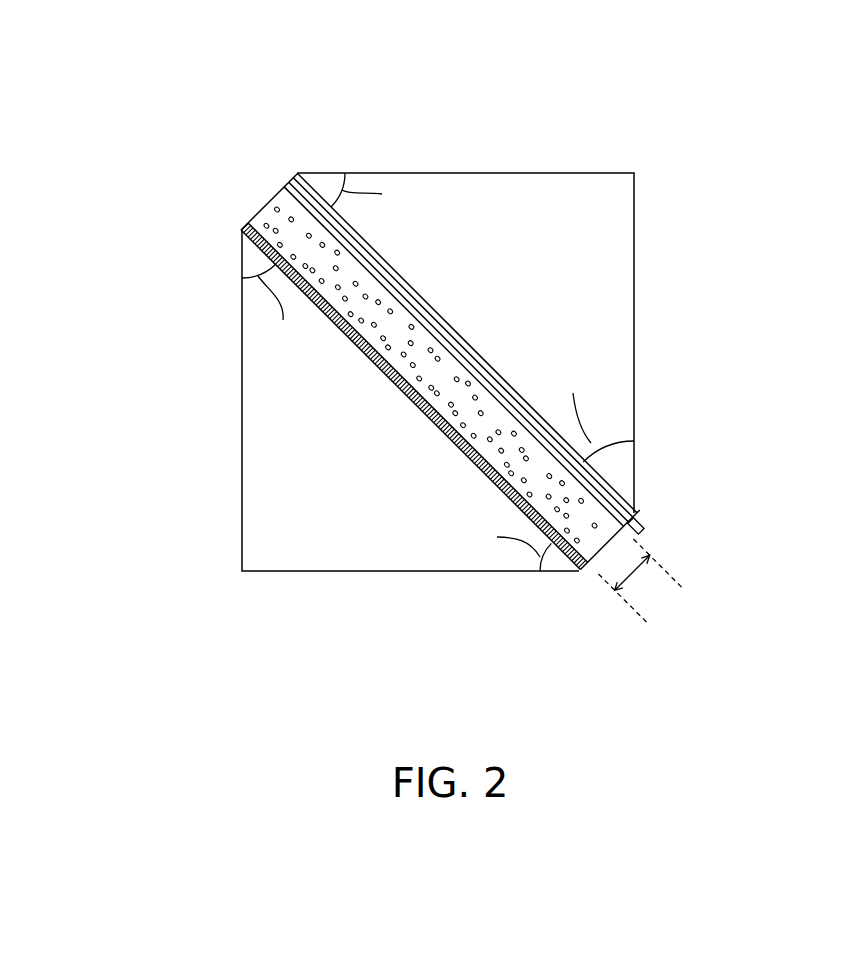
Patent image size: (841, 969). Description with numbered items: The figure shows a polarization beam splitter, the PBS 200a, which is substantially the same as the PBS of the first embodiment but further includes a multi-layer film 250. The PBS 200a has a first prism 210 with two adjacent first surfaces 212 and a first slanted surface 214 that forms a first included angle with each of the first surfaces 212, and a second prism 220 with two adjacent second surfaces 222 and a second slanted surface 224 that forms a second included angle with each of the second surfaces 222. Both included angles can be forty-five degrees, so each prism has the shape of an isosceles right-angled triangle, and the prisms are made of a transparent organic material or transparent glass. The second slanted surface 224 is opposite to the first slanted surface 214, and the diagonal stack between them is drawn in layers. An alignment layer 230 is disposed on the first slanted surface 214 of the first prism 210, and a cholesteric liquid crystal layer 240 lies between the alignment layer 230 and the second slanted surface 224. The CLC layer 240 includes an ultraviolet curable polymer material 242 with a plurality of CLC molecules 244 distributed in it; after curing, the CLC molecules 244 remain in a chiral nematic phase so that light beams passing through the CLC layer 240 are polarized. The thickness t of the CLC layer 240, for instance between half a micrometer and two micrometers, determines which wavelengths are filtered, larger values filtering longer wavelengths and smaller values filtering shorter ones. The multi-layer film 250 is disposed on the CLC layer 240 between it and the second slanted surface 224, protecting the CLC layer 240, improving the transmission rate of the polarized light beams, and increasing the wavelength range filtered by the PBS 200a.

The PBS 200a is at (760, 729).
The first prism 210 is at (263, 475).
The first surfaces 212 is at (233, 327).
The first slanted surface 214 is at (438, 442).
The second prism 220 is at (613, 263).
The second surfaces 222 is at (485, 163).
The second slanted surface 224 is at (394, 262).
The alignment layer 230 is at (243, 245).
The cholesteric liquid crystal layer 240 is at (300, 76).
The polymer material 242 is at (255, 207).
The CLC molecules 244 is at (280, 205).
The multi-layer film 250 is at (637, 532).
The thickness t is at (630, 578).